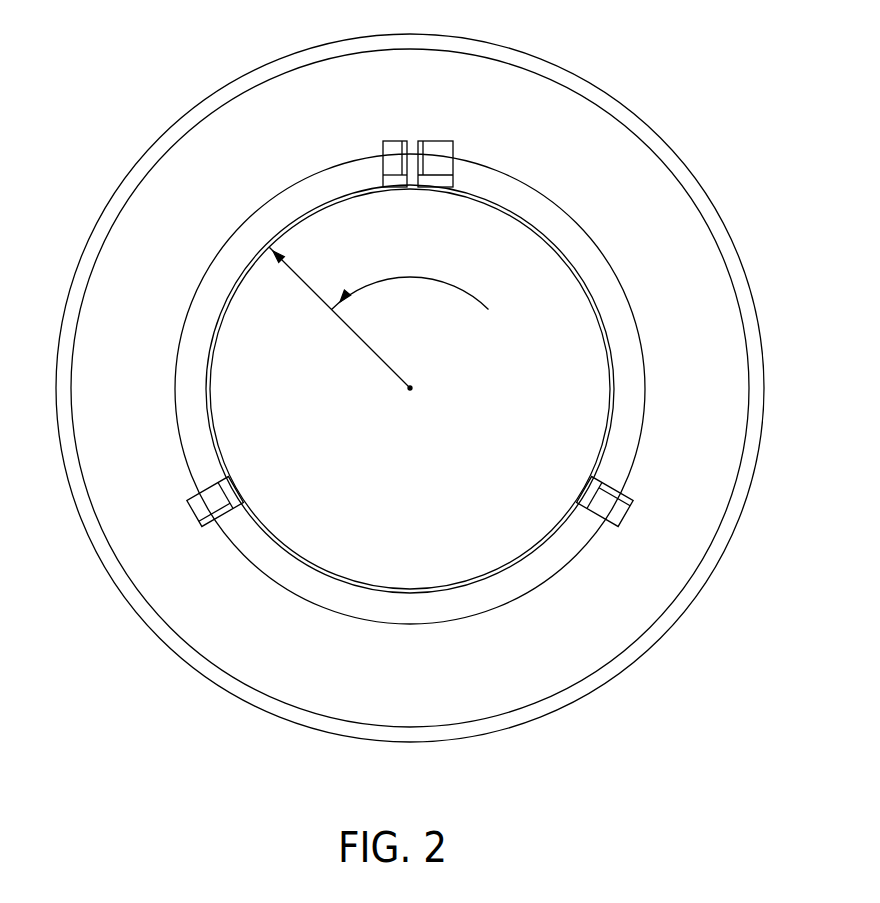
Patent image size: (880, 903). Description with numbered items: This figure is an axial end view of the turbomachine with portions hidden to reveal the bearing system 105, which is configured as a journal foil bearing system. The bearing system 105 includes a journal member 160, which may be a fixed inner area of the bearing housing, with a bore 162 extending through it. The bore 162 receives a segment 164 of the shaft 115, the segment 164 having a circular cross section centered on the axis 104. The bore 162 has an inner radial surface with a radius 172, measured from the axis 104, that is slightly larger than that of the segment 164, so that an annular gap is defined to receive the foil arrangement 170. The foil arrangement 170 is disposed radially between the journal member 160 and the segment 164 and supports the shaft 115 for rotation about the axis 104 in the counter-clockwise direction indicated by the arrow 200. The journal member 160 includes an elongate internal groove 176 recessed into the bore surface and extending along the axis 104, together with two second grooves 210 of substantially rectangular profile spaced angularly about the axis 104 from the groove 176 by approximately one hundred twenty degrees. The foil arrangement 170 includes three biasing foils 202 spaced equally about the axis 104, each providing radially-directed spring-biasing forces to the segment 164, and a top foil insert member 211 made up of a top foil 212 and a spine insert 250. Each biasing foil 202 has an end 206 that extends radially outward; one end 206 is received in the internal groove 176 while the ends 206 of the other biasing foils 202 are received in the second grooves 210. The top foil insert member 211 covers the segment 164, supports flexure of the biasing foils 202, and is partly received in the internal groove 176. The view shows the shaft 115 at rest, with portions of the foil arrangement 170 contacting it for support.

The journal member 160 is at (547, 97).
The internal groove 176 is at (463, 125).
The top foil insert member 211 is at (375, 131).
The spine insert 250 is at (428, 128).
The biasing foil 202 is at (447, 158).
The bearing system 105 is at (410, 383).
The foil arrangement 170 is at (524, 385).
The bore 162 is at (442, 389).
The top foil 212 is at (408, 224).
The arrow 200 is at (447, 278).
The radius 172 is at (352, 335).
The axis 104 is at (410, 387).
The shaft segment 164 is at (432, 433).
The second groove 210 is at (200, 505).
The end 206 is at (195, 518).
The shaft 115 is at (472, 565).